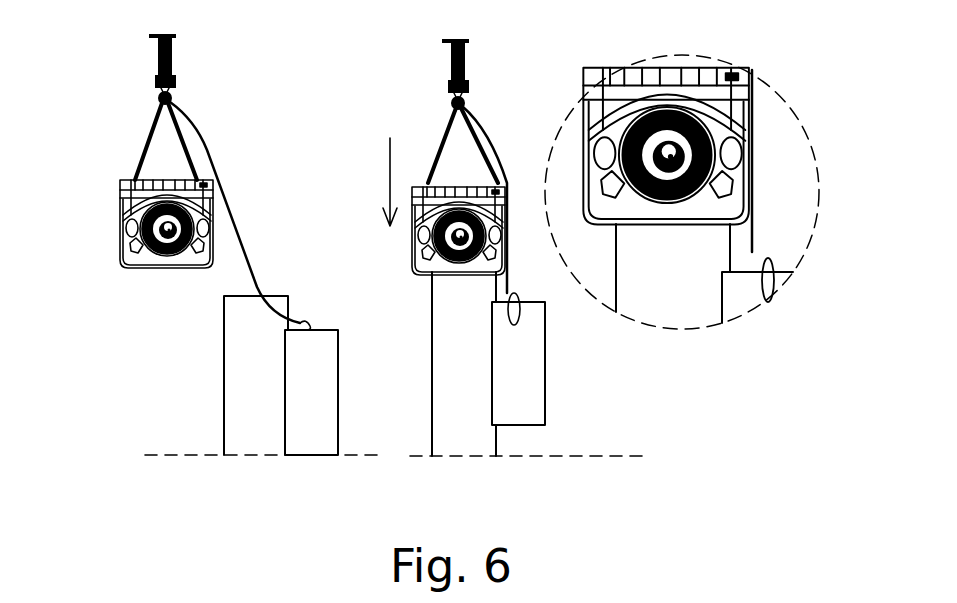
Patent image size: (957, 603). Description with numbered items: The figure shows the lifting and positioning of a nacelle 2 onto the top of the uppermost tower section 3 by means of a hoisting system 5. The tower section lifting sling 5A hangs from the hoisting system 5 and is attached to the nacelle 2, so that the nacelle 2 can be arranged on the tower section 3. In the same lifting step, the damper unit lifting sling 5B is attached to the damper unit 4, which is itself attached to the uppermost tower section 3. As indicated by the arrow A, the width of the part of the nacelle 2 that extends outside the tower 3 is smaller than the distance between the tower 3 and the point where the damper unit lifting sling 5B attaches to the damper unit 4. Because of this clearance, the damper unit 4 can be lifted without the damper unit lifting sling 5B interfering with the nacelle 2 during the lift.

The nacelle 2 is at (120, 258).
The uppermost tower section 3 is at (257, 442).
The damper unit 4 is at (320, 442).
The hoisting system 5 is at (172, 55).
The tower section lifting sling 5A is at (137, 152).
The damper unit lifting sling 5B is at (240, 243).
The arrow A is at (733, 222).